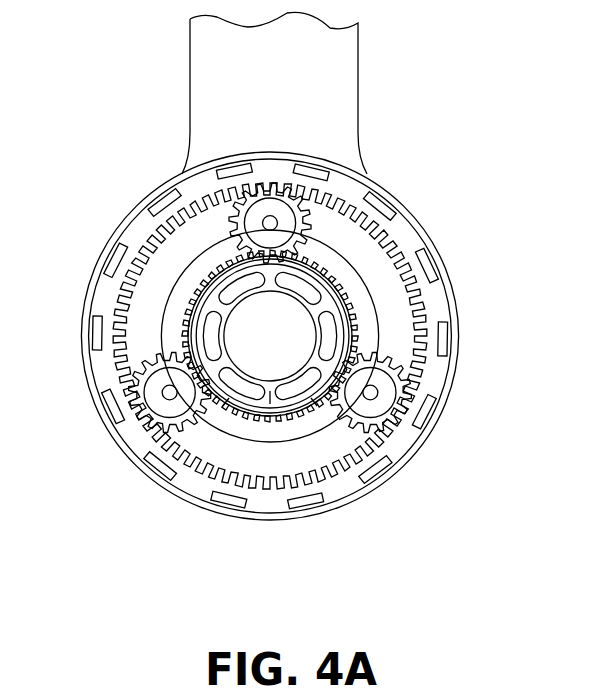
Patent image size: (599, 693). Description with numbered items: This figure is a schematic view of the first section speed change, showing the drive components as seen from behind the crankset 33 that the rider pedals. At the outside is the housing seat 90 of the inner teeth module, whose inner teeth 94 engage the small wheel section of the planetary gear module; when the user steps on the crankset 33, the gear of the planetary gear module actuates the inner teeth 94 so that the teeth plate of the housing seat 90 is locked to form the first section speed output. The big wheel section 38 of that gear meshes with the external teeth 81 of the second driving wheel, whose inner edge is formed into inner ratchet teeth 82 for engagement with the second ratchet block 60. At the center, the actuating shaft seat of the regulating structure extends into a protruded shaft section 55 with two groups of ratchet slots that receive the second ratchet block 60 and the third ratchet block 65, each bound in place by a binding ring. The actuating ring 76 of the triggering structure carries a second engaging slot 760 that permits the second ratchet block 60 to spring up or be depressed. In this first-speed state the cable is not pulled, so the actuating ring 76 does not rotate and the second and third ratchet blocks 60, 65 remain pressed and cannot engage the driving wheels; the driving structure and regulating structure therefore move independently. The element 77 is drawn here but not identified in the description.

The crankset 33 is at (193, 77).
The housing seat 90 is at (100, 260).
The inner teeth 94 is at (103, 300).
The second ratchet block 60 is at (315, 262).
The planet gear 77 is at (240, 250).
The big wheel section 38 is at (152, 398).
The third ratchet block 65 is at (217, 268).
The actuating ring 76 is at (353, 322).
The second engaging slot 760 is at (332, 275).
The external teeth 81 is at (223, 395).
The inner ratchet teeth 82 is at (247, 397).
The protruded shaft section 55 is at (278, 397).